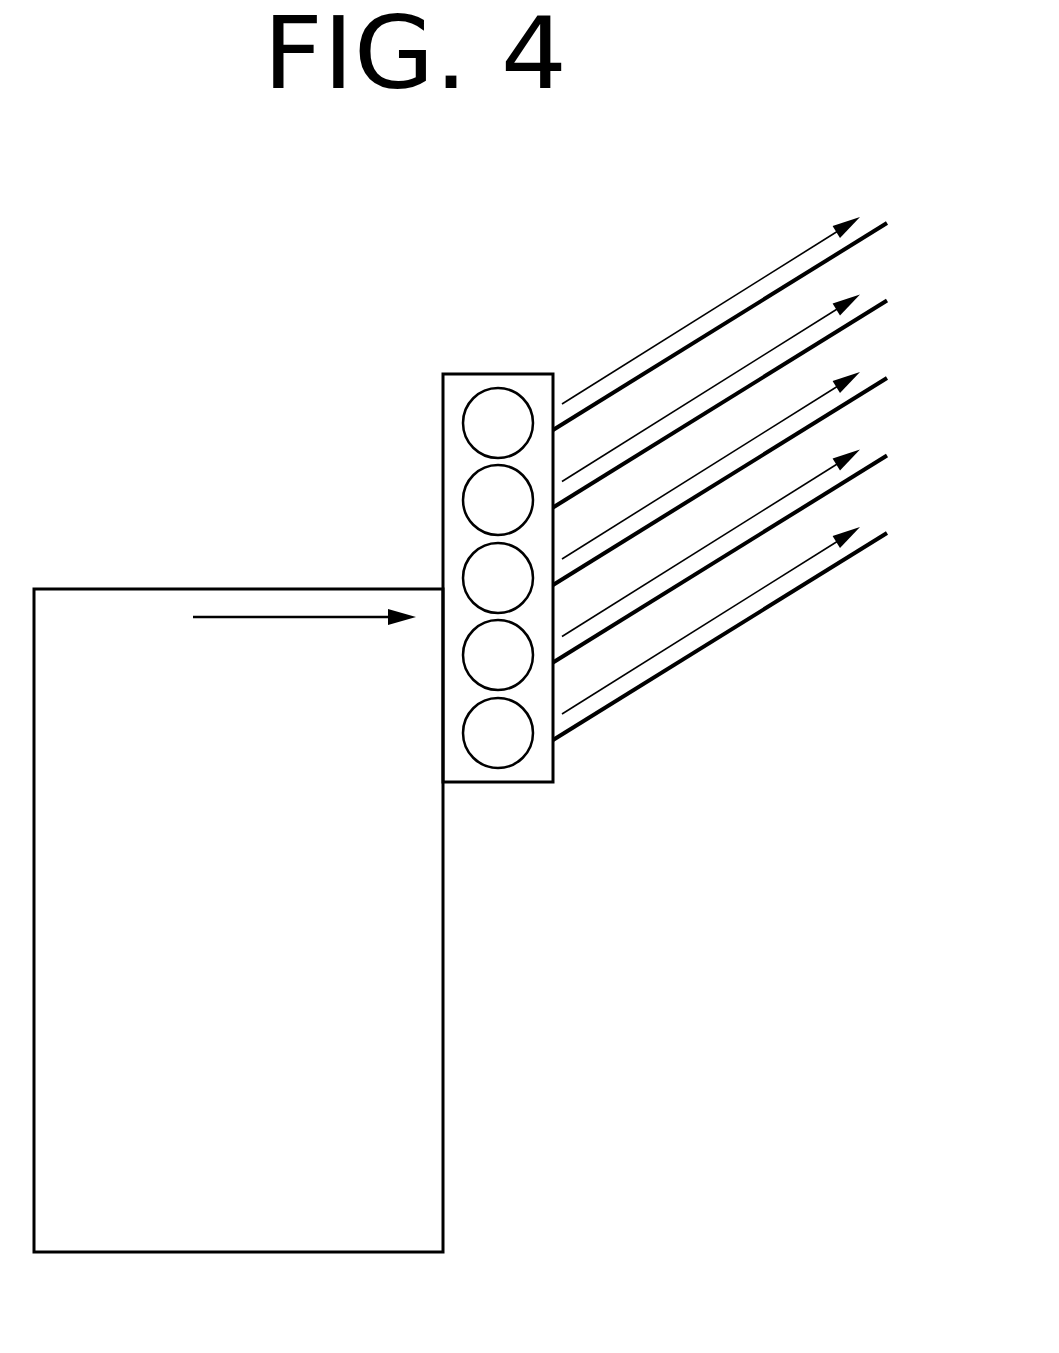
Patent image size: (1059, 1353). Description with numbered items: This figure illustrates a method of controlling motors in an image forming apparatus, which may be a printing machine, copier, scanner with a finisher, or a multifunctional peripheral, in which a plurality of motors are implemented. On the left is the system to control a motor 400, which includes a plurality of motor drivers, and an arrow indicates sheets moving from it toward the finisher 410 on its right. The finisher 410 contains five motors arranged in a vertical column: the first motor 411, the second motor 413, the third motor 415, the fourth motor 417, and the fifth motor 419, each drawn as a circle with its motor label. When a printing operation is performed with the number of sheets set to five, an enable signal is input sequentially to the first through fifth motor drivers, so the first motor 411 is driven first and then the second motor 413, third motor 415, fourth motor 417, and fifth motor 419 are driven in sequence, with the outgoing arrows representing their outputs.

The system to control a motor 400 is at (115, 588).
The finisher 410 is at (443, 374).
The first motor 411 is at (498, 388).
The second motor 413 is at (463, 500).
The third motor 415 is at (465, 567).
The fourth motor 417 is at (530, 673).
The fifth motor 419 is at (497, 767).